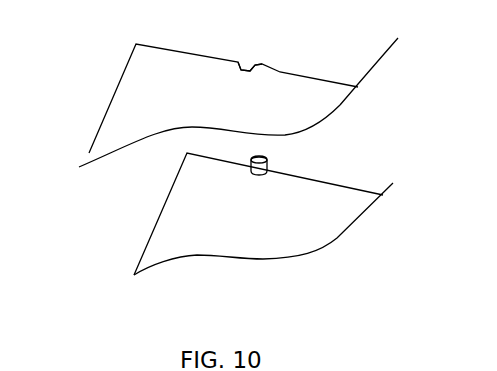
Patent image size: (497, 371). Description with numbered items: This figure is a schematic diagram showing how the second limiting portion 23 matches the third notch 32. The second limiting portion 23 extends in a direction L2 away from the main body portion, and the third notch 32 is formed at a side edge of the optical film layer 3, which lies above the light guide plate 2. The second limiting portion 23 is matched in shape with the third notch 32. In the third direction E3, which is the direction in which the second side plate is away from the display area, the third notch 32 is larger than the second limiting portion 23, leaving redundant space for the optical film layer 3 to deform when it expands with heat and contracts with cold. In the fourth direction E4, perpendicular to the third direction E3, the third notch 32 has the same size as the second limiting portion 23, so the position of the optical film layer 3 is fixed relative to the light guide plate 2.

The light guide plate 2 is at (185, 226).
The optical film layer 3 is at (145, 102).
The third notch 32 is at (246, 66).
The second limiting portion 23 is at (267, 161).
The direction L2 is at (243, 154).
The third direction E3 is at (300, 230).
The fourth direction E4 is at (287, 187).